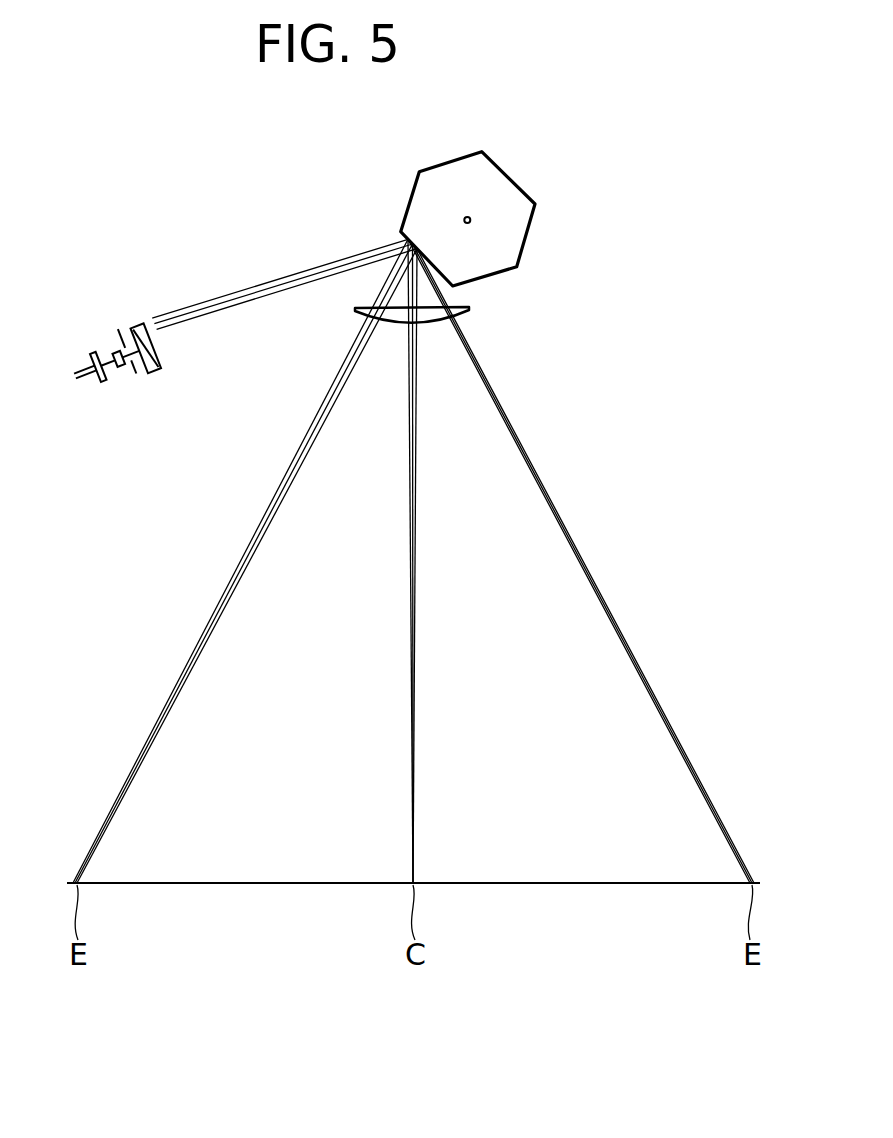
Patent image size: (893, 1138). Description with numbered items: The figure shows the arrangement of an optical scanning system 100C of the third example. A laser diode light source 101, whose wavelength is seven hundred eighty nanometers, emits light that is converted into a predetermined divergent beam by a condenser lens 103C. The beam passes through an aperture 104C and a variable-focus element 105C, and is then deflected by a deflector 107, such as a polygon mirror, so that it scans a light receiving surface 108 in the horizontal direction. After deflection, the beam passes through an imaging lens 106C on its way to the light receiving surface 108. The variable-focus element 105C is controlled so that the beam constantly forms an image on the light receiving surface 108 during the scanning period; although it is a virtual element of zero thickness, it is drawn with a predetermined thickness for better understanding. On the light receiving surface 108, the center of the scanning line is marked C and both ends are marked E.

The optical scanning system 100C is at (722, 178).
The laser diode light source 101 is at (95, 380).
The condenser lens 103C is at (108, 348).
The aperture 104C is at (130, 375).
The variable-focus element 105C is at (135, 322).
The imaging lens 106C is at (355, 308).
The deflector 107 is at (508, 230).
The light receiving surface 108 is at (571, 885).